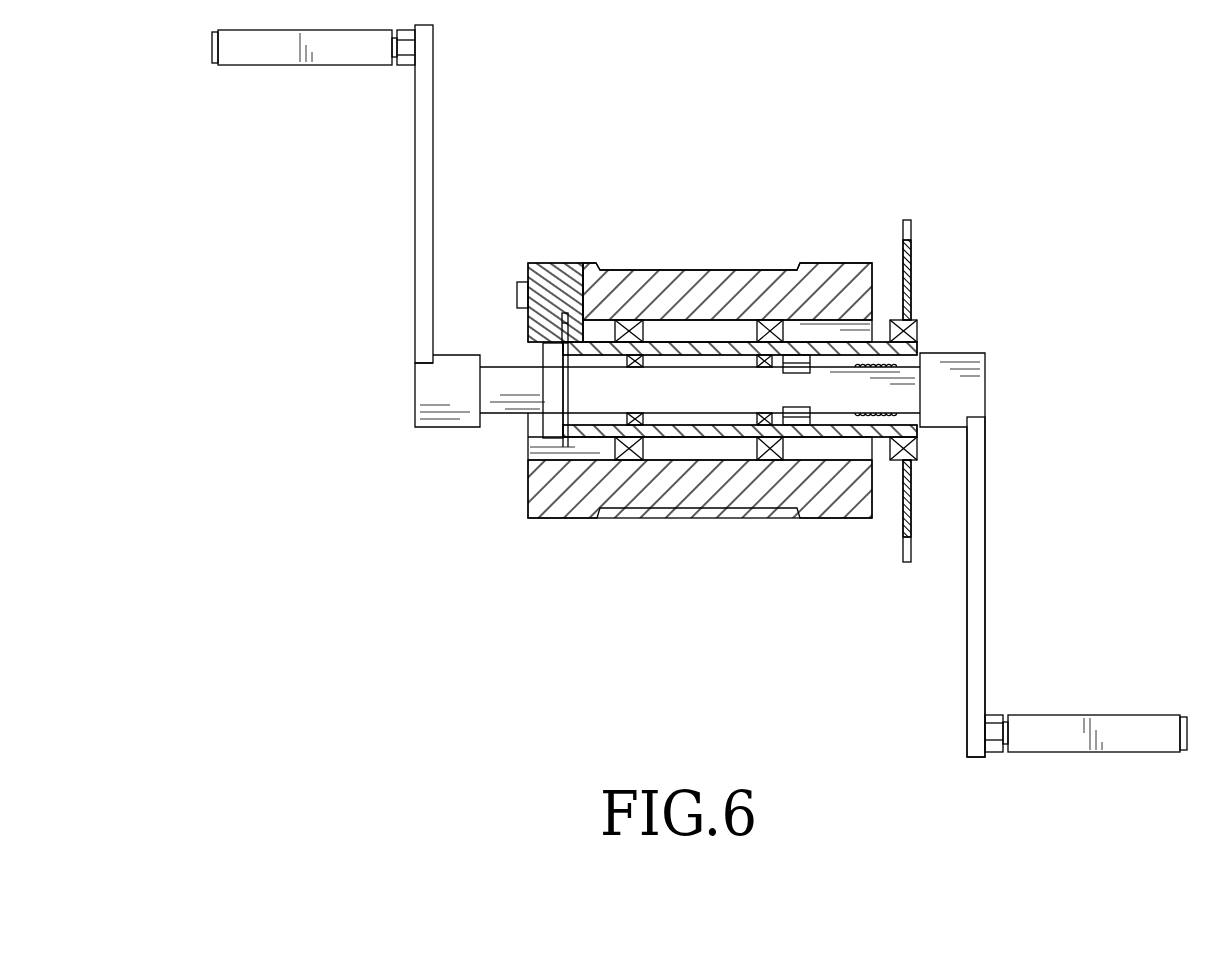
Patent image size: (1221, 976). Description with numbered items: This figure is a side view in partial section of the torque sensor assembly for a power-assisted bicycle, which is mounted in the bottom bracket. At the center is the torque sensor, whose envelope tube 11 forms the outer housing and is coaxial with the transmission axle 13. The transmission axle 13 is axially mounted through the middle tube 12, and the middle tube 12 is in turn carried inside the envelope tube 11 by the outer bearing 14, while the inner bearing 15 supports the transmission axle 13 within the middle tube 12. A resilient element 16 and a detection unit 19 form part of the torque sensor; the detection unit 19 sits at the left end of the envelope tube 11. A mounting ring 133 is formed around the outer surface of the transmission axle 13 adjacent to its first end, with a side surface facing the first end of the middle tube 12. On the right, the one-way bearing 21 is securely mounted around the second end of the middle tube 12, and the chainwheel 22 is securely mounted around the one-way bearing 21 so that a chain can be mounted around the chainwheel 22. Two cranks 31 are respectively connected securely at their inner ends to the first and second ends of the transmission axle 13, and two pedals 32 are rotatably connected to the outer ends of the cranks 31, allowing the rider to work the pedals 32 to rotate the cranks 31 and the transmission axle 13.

The envelope tube 11 is at (660, 272).
The middle tube 12 is at (716, 345).
The transmission axle 13 is at (708, 400).
The mounting ring 133 is at (551, 428).
The outer bearing 14 is at (773, 330).
The inner bearing 15 is at (770, 440).
The resilient element 16 is at (896, 364).
The detection unit 19 is at (556, 270).
The one-way bearing 21 is at (910, 335).
The chainwheel 22 is at (908, 272).
The crank 31 is at (422, 178).
The pedal 32 is at (276, 58).